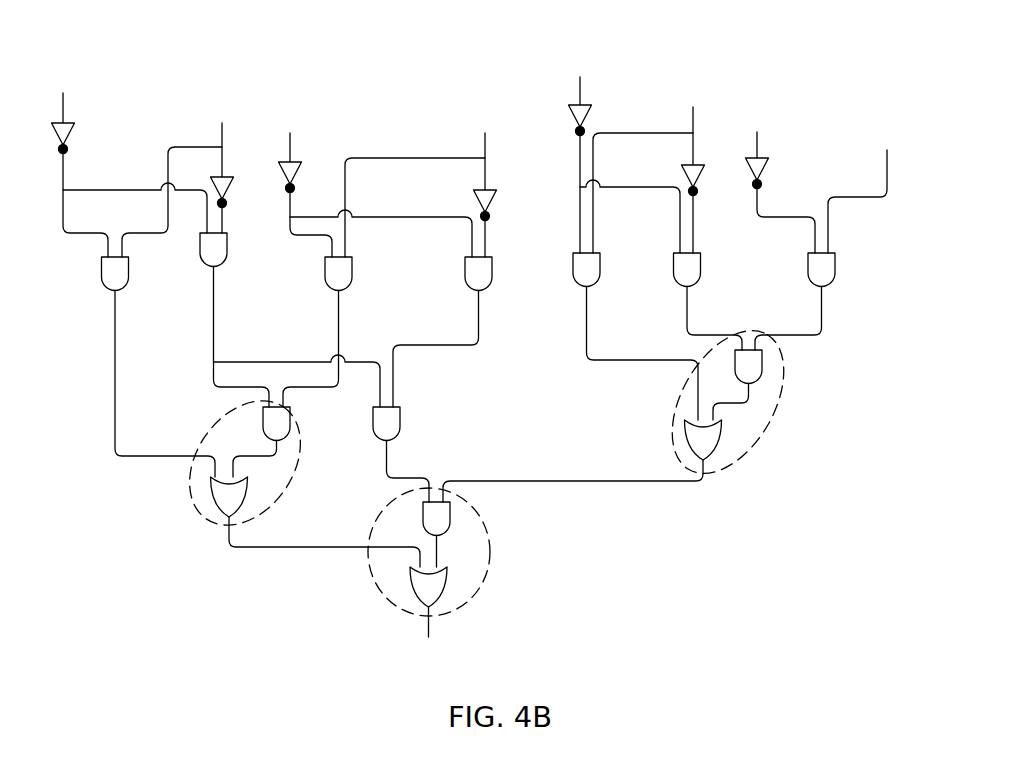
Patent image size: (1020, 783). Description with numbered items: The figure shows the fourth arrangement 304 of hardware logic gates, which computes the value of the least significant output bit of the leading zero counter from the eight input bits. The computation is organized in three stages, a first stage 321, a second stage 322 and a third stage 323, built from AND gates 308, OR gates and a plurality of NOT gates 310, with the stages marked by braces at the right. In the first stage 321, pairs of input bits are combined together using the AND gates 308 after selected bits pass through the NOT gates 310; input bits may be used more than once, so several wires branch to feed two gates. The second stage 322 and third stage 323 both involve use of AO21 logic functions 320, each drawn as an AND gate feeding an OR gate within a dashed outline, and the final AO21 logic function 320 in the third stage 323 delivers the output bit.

The fourth arrangement 304 is at (786, 64).
The AND gate 308 is at (391, 425).
The NOT gate 310 is at (498, 195).
The AO21 logic function 320 is at (787, 366).
The first stage 321 is at (899, 105).
The second stage 322 is at (899, 322).
The third stage 323 is at (899, 490).